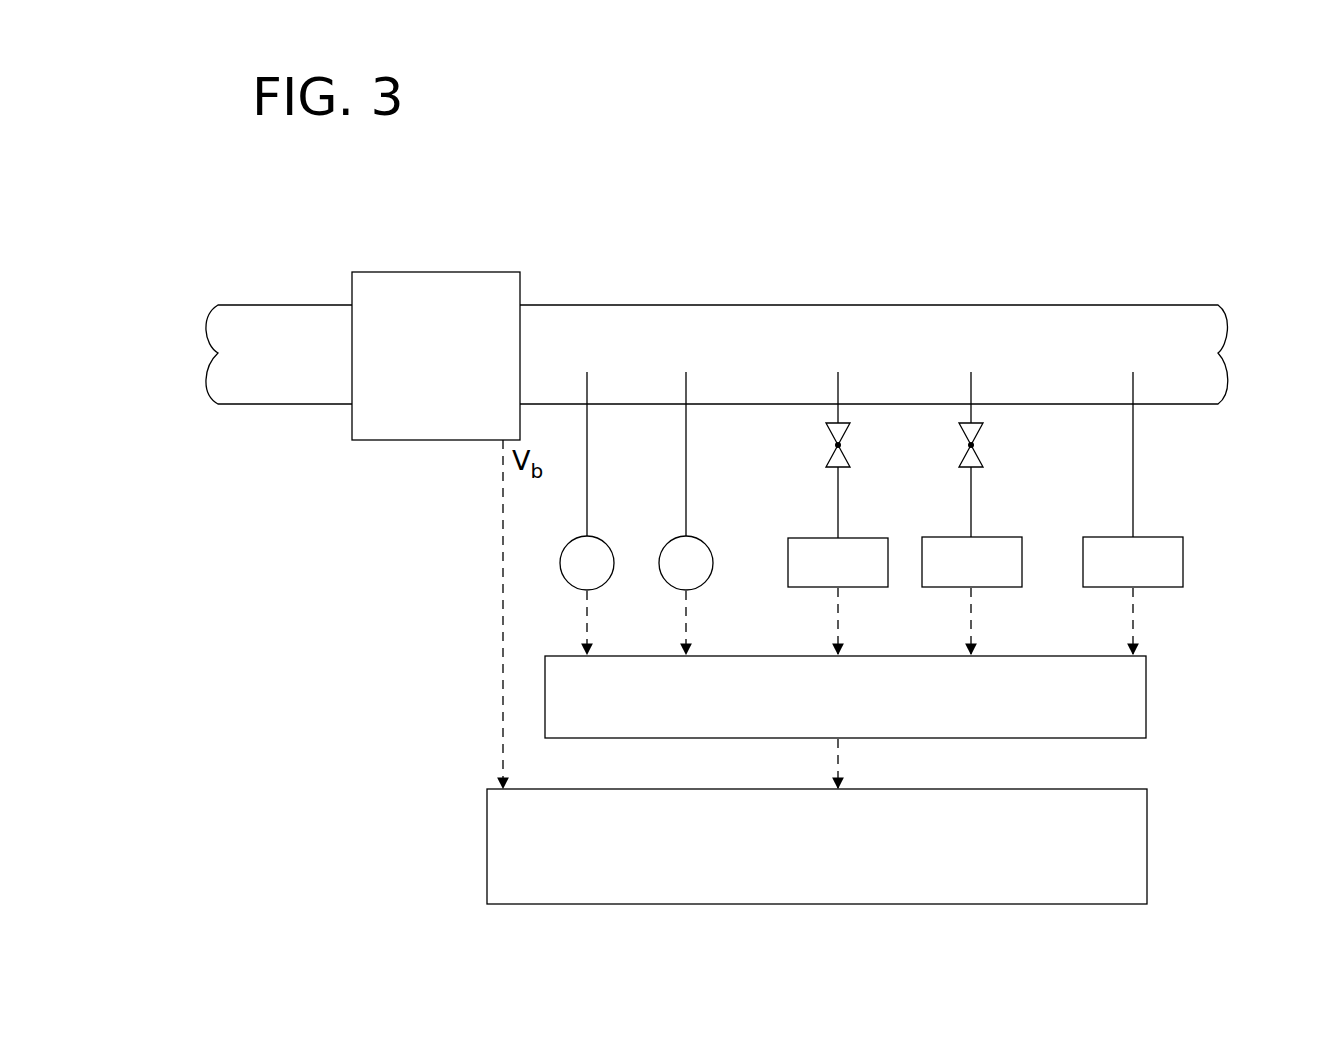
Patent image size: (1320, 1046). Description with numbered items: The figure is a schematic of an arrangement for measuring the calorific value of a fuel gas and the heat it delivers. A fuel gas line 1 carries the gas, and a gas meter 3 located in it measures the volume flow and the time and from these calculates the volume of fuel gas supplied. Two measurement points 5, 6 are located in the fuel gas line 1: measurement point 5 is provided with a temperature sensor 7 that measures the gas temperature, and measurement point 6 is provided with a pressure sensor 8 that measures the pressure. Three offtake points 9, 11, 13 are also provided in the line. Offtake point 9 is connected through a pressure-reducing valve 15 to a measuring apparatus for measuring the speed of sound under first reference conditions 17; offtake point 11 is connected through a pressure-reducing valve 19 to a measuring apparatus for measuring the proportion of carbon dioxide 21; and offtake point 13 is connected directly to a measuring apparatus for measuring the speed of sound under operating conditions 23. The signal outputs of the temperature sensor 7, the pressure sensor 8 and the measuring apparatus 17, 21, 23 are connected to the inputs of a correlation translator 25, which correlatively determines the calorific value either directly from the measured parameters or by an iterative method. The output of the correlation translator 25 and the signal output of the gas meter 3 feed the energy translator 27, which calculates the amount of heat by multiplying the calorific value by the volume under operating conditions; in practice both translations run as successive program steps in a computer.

The fuel gas line 1 is at (291, 322).
The gas meter 3 is at (474, 290).
The measurement point 5 is at (587, 372).
The measurement point 6 is at (686, 372).
The temperature sensor 7 is at (605, 542).
The pressure sensor 8 is at (704, 545).
The offtake point 9 is at (838, 372).
The offtake point 11 is at (971, 372).
The offtake point 13 is at (1133, 372).
The pressure-reducing valve 15 is at (846, 456).
The measuring apparatus for measuring the speed of sound under first reference condi 17 is at (880, 588).
The pressure-reducing valve 19 is at (979, 456).
The measuring apparatus for measuring the proportion of carbon dioxide 21 is at (1012, 588).
The measuring apparatus for measuring the speed of sound under operating conditions 23 is at (1172, 588).
The correlation translator 25 is at (1147, 682).
The energy translator 27 is at (1148, 820).